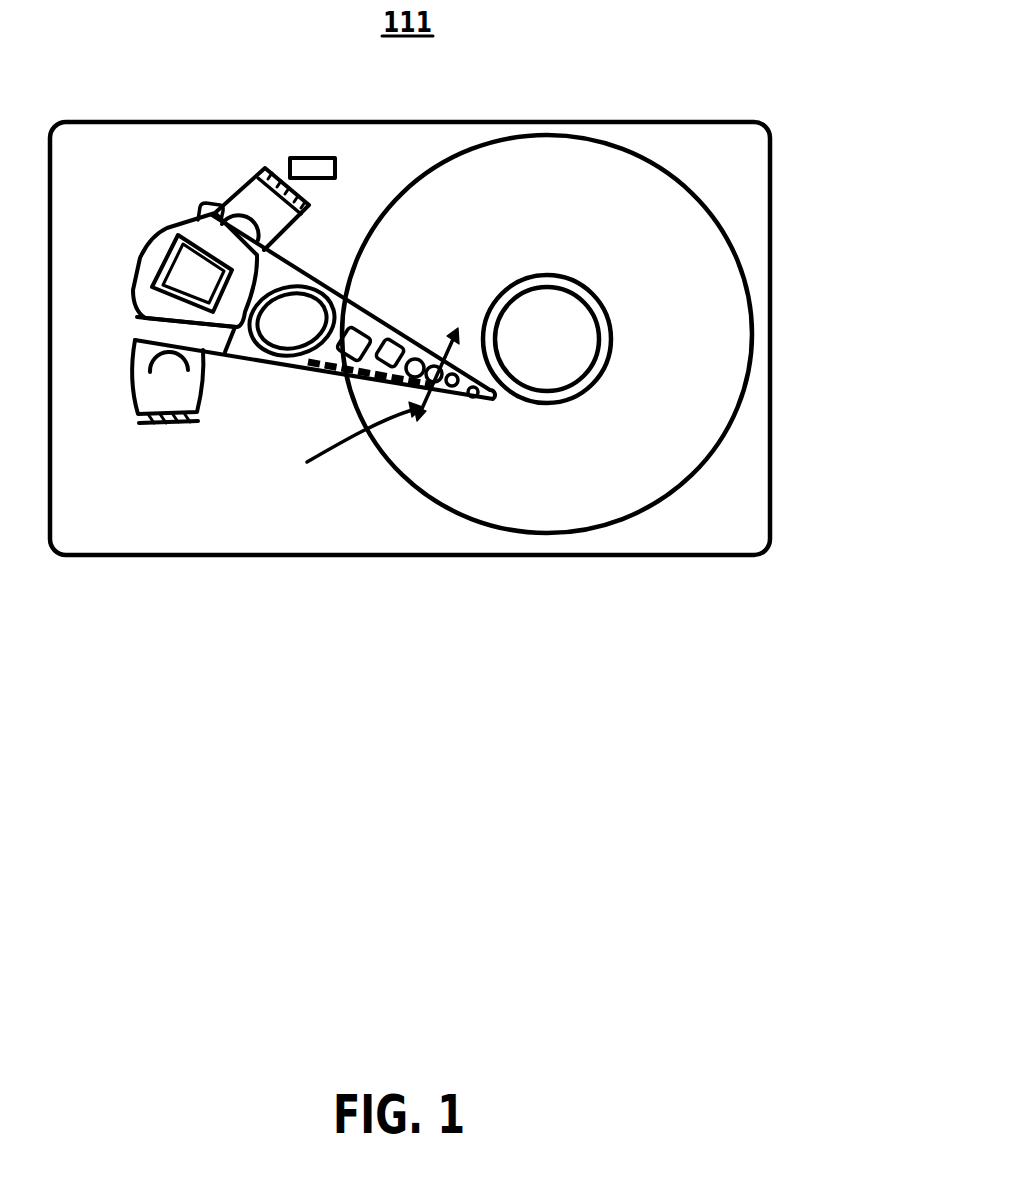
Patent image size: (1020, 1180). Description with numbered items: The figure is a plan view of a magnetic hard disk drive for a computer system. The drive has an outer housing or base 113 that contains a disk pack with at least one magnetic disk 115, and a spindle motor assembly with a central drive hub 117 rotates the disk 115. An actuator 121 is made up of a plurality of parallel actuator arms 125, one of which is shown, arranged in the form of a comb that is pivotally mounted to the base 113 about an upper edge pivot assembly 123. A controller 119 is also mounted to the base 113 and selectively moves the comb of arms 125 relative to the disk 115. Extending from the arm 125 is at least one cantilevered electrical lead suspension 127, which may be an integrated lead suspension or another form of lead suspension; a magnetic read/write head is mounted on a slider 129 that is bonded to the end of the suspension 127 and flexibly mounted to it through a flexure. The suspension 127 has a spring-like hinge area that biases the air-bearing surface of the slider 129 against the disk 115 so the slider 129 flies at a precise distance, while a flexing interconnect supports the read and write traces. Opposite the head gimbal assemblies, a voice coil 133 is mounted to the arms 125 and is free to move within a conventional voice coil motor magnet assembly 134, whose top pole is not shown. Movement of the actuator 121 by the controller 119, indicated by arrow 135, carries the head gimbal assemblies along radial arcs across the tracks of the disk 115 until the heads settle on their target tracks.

The base 113 is at (686, 121).
The magnetic disk 115 is at (686, 194).
The central drive hub 117 is at (578, 275).
The controller 119 is at (337, 167).
The actuator 121 is at (305, 329).
The pivot assembly 123 is at (280, 357).
The actuator arm 125 is at (348, 318).
The electrical lead suspension 127 is at (416, 347).
The slider 129 is at (457, 399).
The voice coil 133 is at (156, 232).
The voice coil motor magnet assembly 134 is at (250, 196).
The arrow 135 is at (341, 440).